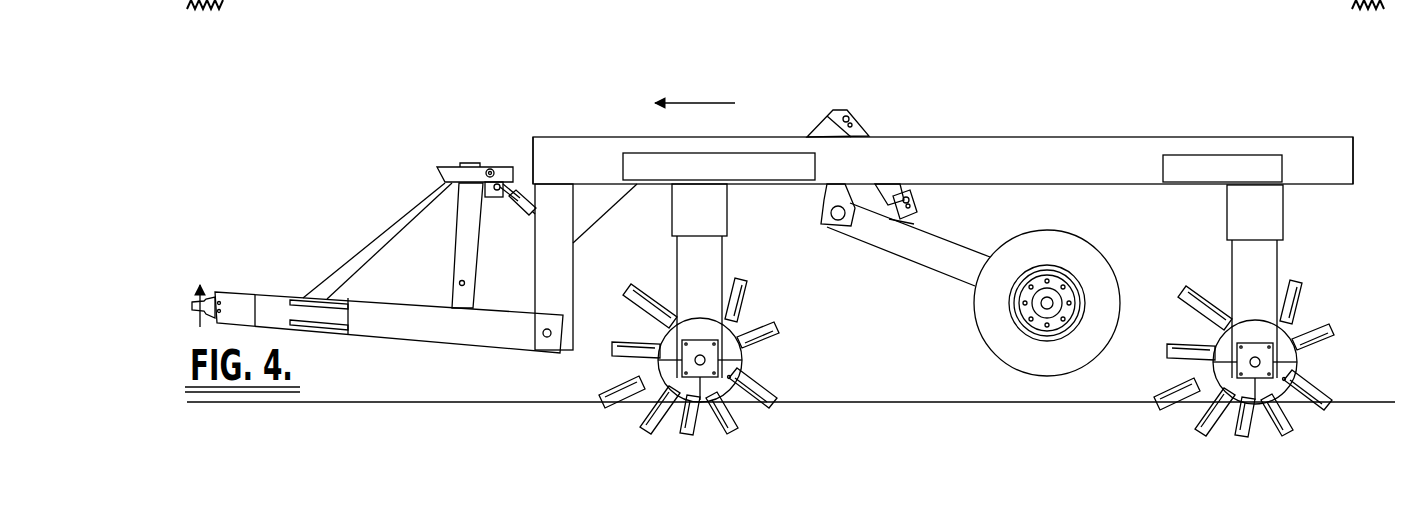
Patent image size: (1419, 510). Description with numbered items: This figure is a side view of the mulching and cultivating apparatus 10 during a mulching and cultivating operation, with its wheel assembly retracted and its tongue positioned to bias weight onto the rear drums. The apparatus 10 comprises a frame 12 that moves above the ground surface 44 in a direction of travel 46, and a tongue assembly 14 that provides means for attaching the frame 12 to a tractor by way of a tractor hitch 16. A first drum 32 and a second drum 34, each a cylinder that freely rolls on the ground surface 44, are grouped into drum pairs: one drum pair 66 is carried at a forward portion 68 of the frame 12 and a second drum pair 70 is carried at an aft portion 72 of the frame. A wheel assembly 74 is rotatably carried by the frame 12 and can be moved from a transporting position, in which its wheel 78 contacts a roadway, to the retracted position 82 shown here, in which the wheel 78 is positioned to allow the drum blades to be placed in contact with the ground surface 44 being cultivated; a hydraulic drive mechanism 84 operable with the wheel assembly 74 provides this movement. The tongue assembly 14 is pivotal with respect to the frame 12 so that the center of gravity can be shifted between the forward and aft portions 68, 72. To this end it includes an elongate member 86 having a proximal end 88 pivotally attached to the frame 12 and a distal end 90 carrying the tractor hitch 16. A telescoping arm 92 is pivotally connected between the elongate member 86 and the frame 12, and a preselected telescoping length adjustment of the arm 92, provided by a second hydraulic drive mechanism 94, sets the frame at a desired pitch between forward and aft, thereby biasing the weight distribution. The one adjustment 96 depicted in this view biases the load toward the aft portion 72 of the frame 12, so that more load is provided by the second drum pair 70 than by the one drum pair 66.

The mulching and cultivating apparatus 10 is at (772, 268).
The frame 12 is at (970, 153).
The tongue assembly 14 is at (350, 250).
The tractor hitch 16 is at (179, 312).
The first drum 32 is at (1246, 361).
The second drum 34 is at (703, 362).
The ground surface 44 is at (791, 385).
The direction of travel 46 is at (703, 82).
The one drum pair 66 is at (707, 315).
The forward portion 68 is at (588, 136).
The second drum pair 70 is at (1251, 317).
The aft portion 72 is at (1356, 136).
The wheel assembly 74 is at (932, 235).
The wheel 78 is at (1062, 303).
The retracted position 82 is at (979, 231).
The hydraulic drive mechanism 84 is at (862, 111).
The elongate member 86 is at (389, 333).
The proximal end 88 is at (530, 357).
The distal end 90 is at (285, 293).
The telescoping arm 92 is at (475, 156).
The second hydraulic drive mechanism 94 is at (510, 222).
The one adjustment 96 is at (377, 213).